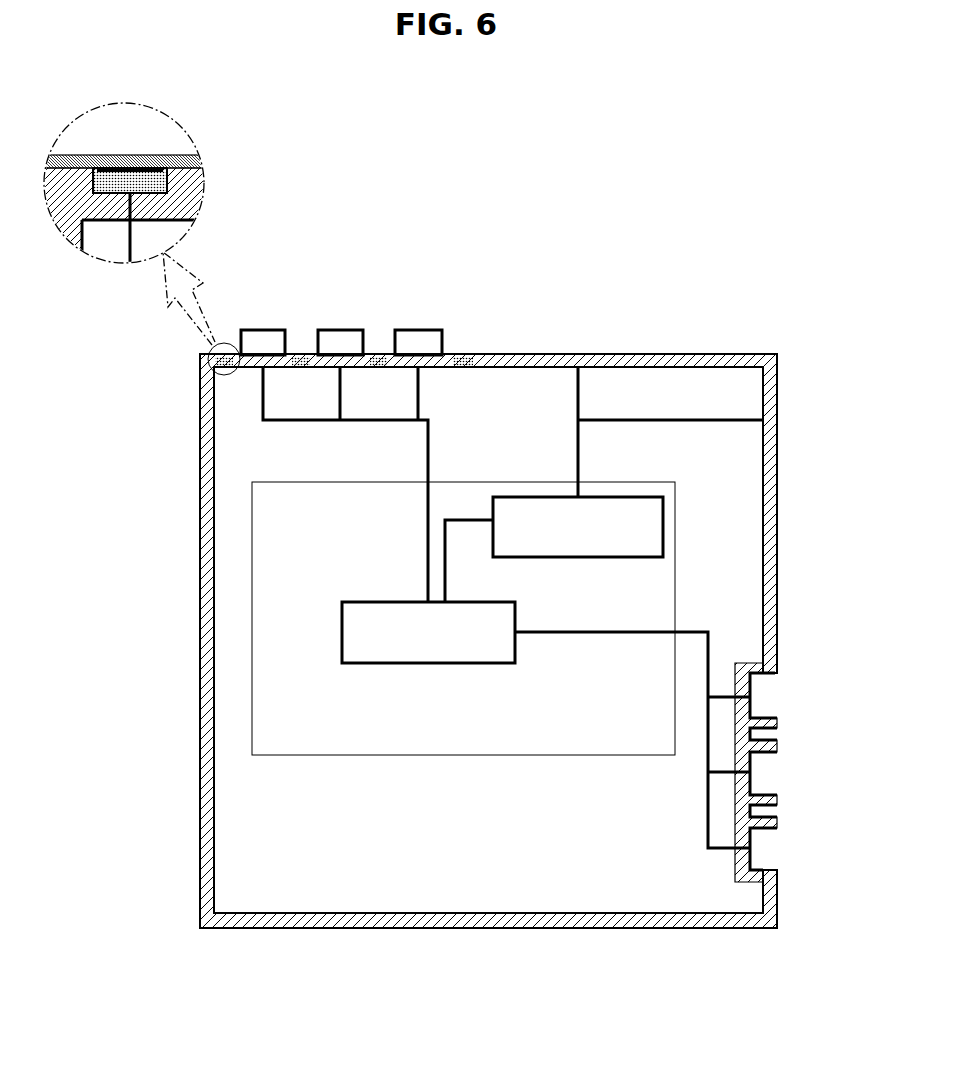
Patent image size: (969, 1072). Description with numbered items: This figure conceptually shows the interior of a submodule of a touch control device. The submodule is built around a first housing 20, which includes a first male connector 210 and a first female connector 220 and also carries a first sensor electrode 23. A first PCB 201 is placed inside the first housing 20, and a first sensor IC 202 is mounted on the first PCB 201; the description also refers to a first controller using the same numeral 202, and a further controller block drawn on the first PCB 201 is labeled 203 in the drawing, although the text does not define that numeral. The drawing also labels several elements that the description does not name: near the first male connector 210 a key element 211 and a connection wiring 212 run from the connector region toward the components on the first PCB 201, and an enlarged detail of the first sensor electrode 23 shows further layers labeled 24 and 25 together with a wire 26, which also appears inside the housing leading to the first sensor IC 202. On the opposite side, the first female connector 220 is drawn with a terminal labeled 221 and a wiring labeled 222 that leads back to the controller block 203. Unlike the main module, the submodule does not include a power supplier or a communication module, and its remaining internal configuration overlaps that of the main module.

The first housing 20 is at (176, 375).
The first sensor electrode 23 is at (166, 183).
The electrode 24 is at (118, 167).
The cover 25 is at (167, 156).
The wire 26 is at (123, 231).
The first PCB 201 is at (248, 484).
The first sensor IC 202 is at (581, 559).
The MCU 203 is at (372, 601).
The first male connector 210 is at (344, 316).
The key cap 211 is at (270, 330).
The connection wiring 212 is at (420, 392).
The first female connector 220 is at (795, 769).
The connector terminal 221 is at (753, 686).
The connector wiring 222 is at (708, 653).